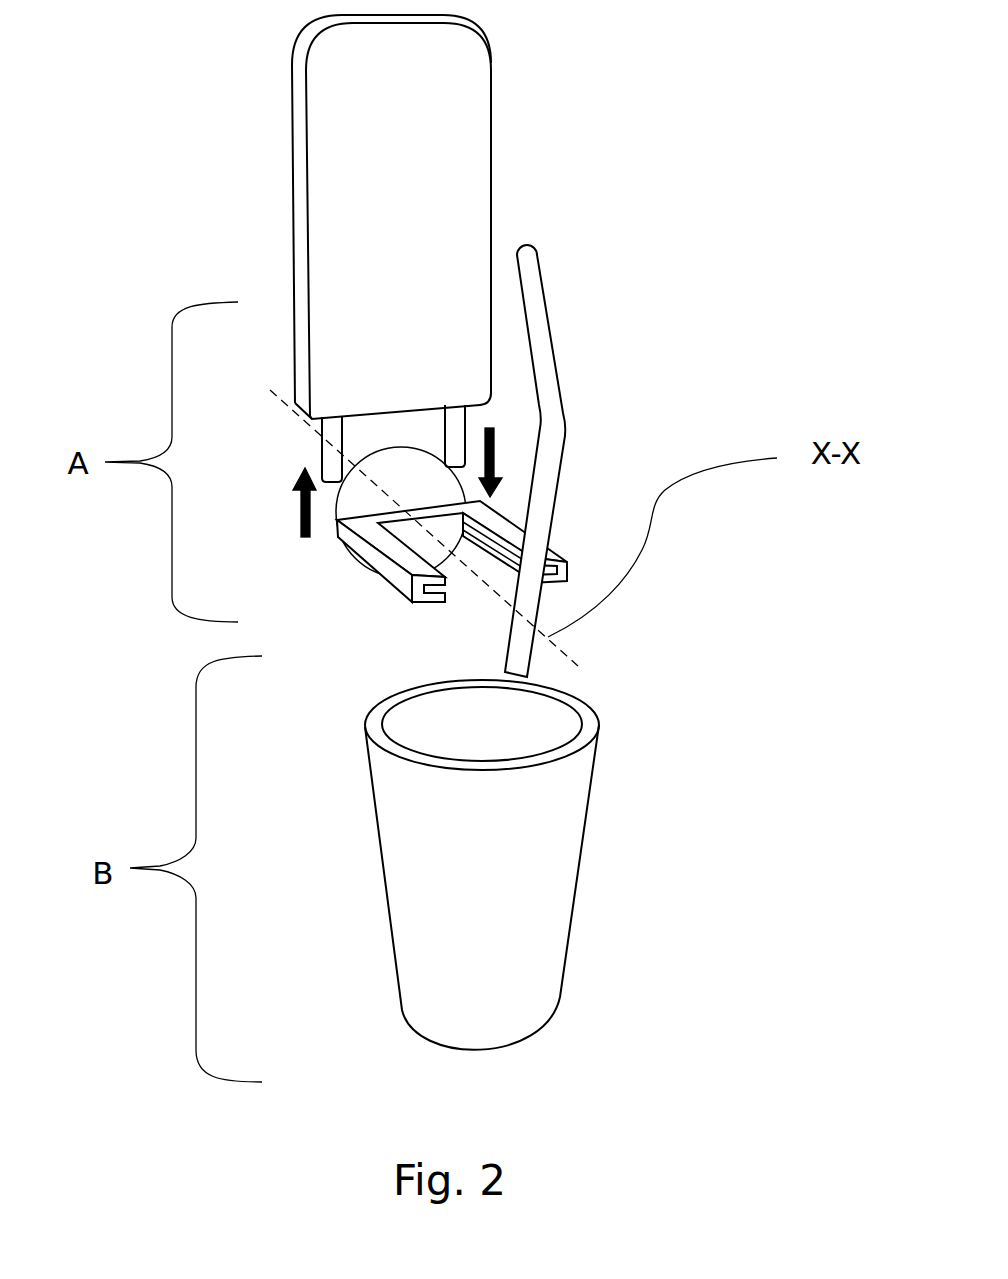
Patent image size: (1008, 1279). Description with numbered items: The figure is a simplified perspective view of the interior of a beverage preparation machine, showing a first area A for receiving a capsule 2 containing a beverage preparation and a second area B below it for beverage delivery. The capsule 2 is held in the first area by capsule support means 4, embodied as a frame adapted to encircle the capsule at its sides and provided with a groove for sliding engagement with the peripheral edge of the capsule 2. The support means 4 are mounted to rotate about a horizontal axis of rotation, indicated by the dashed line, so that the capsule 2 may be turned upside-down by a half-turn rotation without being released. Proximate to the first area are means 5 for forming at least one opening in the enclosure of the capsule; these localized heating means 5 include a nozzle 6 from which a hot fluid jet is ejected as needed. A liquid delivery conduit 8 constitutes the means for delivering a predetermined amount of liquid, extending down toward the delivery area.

The means for forming at least one opening 5 is at (462, 282).
The nozzle 6 is at (460, 428).
The capsule support means 4 is at (381, 542).
The liquid delivery conduit 8 is at (550, 358).
The capsule 2 is at (517, 658).